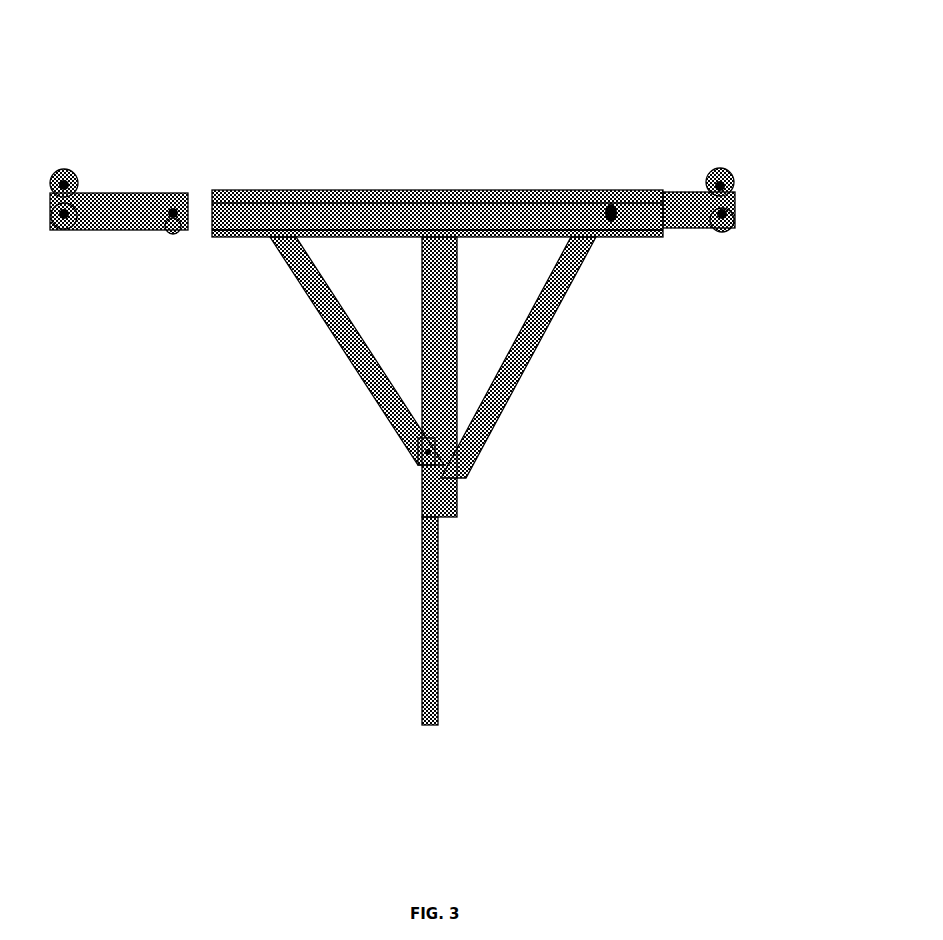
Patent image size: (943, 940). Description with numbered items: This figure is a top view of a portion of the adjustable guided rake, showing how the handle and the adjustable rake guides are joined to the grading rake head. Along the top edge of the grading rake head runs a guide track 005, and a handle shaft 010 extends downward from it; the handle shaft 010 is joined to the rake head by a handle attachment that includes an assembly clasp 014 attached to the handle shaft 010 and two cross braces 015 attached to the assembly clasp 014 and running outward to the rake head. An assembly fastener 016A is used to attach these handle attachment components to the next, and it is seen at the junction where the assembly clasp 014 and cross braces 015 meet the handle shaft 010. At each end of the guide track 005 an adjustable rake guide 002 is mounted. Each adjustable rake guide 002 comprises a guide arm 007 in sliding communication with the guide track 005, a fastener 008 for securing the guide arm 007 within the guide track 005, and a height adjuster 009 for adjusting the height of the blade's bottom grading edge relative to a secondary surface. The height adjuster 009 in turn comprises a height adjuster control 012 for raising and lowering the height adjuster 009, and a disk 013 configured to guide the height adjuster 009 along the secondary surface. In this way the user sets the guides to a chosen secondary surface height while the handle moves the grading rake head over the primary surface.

The adjustable rake guide 002 is at (156, 194).
The guide track 005 is at (373, 210).
The guide arm 007 is at (124, 212).
The fastener 008 is at (176, 216).
The height adjuster 009 is at (75, 178).
The handle shaft 010 is at (436, 492).
The height adjuster control 012 is at (66, 228).
The disk 013 is at (66, 180).
The assembly clasp 014 is at (453, 468).
The cross brace 015 is at (518, 372).
The assembly fastener 016A is at (420, 463).